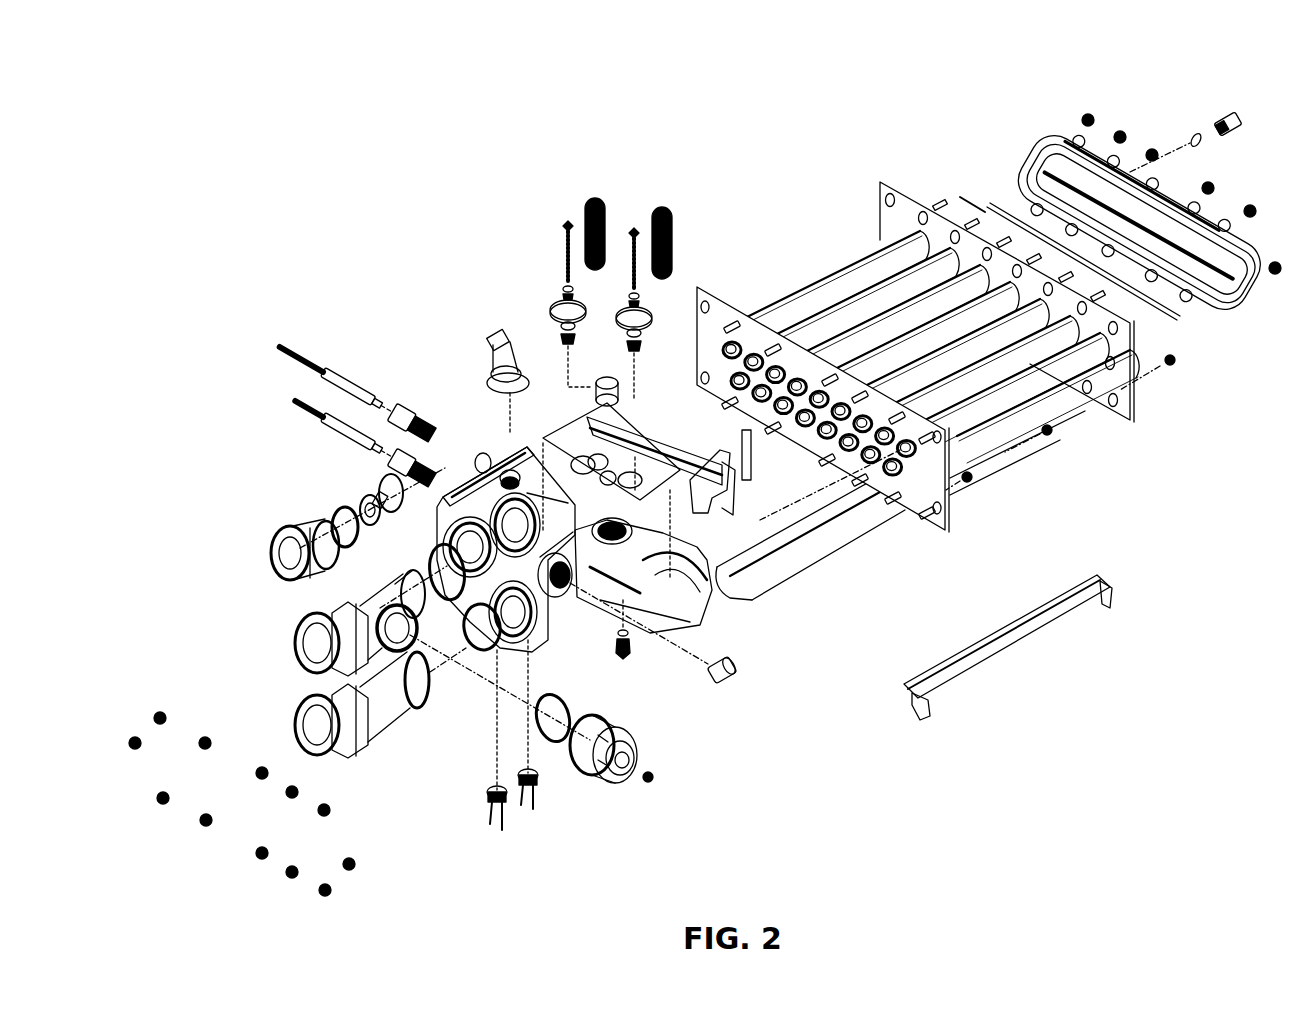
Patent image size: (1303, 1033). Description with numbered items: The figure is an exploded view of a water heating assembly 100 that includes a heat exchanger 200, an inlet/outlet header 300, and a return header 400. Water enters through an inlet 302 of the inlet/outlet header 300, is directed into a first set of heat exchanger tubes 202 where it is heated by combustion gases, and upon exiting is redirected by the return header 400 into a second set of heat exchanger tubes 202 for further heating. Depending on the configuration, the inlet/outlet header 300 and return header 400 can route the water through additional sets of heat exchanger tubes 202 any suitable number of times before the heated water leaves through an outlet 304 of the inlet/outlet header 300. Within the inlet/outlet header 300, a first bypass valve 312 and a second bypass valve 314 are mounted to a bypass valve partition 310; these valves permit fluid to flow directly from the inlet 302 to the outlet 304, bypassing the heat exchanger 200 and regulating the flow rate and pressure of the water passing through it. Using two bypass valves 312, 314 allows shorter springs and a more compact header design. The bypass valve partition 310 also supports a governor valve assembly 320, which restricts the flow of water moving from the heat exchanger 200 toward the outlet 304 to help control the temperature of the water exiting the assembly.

The water heating assembly 100 is at (297, 74).
The heat exchanger 200 is at (938, 553).
The heat exchanger tubes 202 is at (1002, 428).
The inlet/outlet header 300 is at (622, 135).
The inlet 302 is at (314, 645).
The outlet 304 is at (314, 727).
The bypass valve partition 310 is at (544, 420).
The first bypass valve 312 is at (660, 185).
The second bypass valve 314 is at (557, 185).
The governor valve assembly 320 is at (270, 552).
The return header 400 is at (1172, 58).